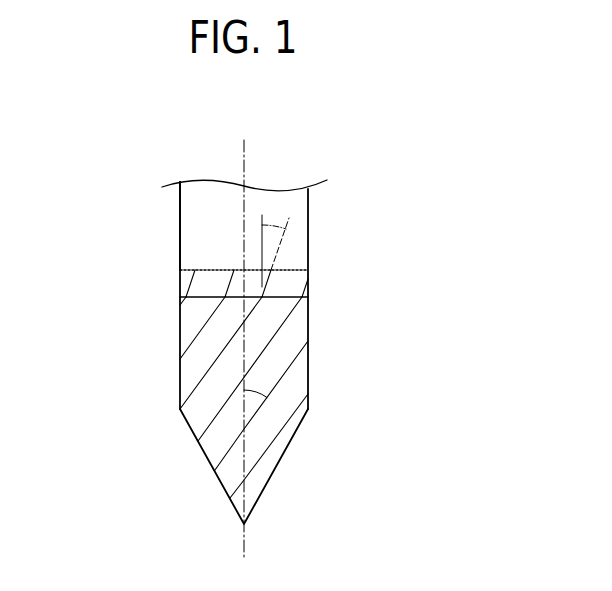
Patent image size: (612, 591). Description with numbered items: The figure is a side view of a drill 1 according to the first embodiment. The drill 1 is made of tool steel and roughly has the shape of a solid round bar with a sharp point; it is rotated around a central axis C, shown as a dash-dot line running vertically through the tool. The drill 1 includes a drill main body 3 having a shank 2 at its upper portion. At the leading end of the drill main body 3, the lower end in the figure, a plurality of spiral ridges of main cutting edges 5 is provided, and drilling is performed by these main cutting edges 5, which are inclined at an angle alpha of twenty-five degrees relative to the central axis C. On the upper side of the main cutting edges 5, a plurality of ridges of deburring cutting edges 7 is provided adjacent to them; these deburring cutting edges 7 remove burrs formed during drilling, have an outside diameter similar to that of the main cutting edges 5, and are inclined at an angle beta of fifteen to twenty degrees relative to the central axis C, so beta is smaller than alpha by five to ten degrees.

The drill 1 is at (126, 176).
The shank 2 is at (310, 213).
The drill main body 3 is at (180, 233).
The main cutting edges 5 is at (297, 360).
The deburring cutting edges 7 is at (310, 293).
The central axis C is at (250, 152).